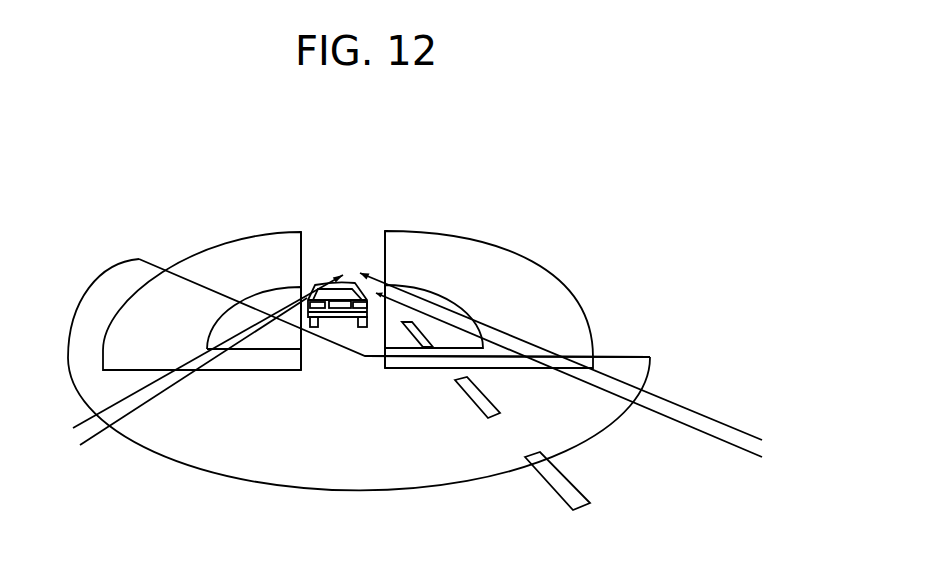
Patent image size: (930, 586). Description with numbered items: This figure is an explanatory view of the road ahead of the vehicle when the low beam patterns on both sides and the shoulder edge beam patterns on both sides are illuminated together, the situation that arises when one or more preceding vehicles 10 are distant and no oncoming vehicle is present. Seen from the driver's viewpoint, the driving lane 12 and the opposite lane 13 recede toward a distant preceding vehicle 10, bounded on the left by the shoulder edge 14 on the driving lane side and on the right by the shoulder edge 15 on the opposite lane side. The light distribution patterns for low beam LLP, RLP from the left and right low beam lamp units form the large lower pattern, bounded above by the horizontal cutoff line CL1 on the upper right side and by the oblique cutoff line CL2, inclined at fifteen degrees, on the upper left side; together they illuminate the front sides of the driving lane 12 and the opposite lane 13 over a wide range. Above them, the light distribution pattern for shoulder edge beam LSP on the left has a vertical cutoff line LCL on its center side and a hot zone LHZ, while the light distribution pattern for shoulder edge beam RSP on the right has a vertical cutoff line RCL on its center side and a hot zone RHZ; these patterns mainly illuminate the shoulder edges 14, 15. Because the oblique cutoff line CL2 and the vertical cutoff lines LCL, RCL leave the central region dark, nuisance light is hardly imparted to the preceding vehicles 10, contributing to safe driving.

The preceding vehicle 10 is at (345, 277).
The driving lane 12 is at (186, 494).
The opposite lane 13 is at (645, 468).
The shoulder edge on the driving lane side 14 is at (93, 428).
The shoulder edge on the opposite lane side 15 is at (717, 428).
The light distribution pattern for shoulder edge beam on the left side LSP is at (247, 255).
The light distribution pattern for shoulder edge beam on the right side RSP is at (450, 250).
The hot zone LHZ is at (257, 302).
The hot zone RHZ is at (433, 298).
The vertical cutoff line LCL is at (302, 247).
The vertical cutoff line RCL is at (385, 240).
The horizontal cutoff line CL1 is at (623, 355).
The oblique cutoff line CL2 is at (343, 346).
The light distribution pattern for low beam on the left side LLP is at (359, 416).
The light distribution pattern for low beam on the right side RLP is at (335, 477).